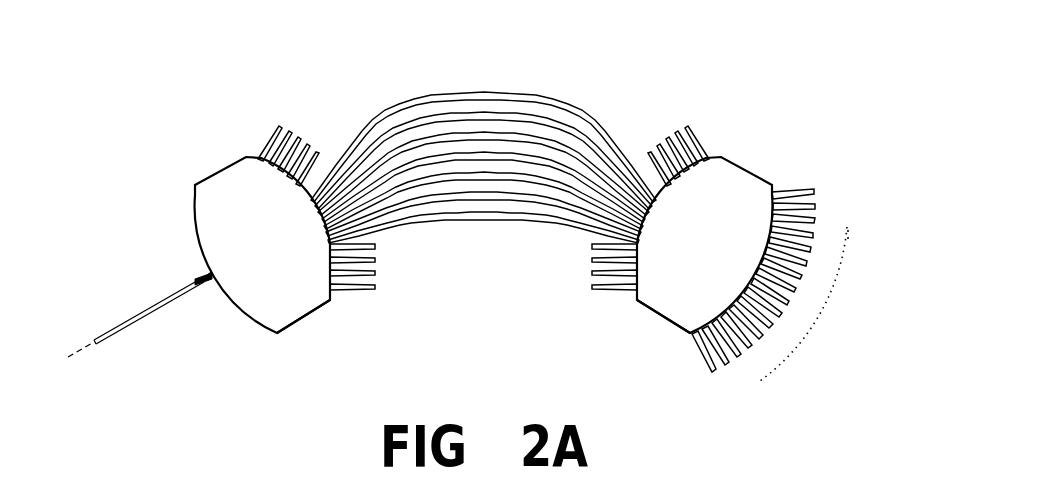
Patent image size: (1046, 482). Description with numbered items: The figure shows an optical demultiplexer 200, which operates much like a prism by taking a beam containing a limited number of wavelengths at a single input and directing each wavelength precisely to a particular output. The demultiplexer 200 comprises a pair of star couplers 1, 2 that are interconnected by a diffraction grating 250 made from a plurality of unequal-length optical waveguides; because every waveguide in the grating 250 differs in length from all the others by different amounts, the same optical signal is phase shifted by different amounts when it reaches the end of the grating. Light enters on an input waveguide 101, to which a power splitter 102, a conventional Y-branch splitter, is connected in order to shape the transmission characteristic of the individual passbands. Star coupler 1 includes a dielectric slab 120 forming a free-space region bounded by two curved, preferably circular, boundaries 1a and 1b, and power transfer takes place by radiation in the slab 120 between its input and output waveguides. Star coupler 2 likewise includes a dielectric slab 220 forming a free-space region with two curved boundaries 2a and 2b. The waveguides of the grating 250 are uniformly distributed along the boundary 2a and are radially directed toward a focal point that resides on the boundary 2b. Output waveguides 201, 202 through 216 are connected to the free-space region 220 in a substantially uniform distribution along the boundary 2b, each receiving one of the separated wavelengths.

The optical demultiplexer 200 is at (752, 55).
The star coupler 1 is at (220, 171).
The dielectric slab 120 is at (277, 250).
The curved boundary 1a is at (278, 334).
The curved boundary 1b is at (330, 298).
The input waveguide 101 is at (130, 315).
The power splitter 102 is at (193, 279).
The diffraction grating 250 is at (562, 237).
The star coupler 2 is at (748, 171).
The dielectric slab 220 is at (718, 250).
The curved boundary 2a is at (636, 300).
The curved boundary 2b is at (691, 334).
The output waveguide 201 is at (820, 194).
The output waveguide 202 is at (822, 209).
The output waveguide 216 is at (714, 369).